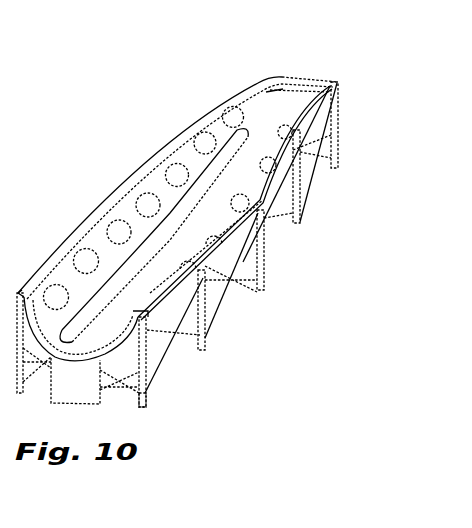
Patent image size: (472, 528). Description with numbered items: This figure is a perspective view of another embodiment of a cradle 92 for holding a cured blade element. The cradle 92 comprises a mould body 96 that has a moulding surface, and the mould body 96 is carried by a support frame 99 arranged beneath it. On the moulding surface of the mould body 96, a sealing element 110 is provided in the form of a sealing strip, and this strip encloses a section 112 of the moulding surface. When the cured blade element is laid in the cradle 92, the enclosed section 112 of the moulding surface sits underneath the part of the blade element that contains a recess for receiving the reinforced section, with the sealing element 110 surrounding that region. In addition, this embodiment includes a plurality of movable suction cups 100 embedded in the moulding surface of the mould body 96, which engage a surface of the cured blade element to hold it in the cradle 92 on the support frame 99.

The cradle 92 is at (96, 178).
The mould body 96 is at (272, 246).
The support frame 99 is at (147, 398).
The movable suction cups 100 is at (176, 172).
The sealing element 110 is at (246, 83).
The section of the moulding surface 112 is at (262, 142).